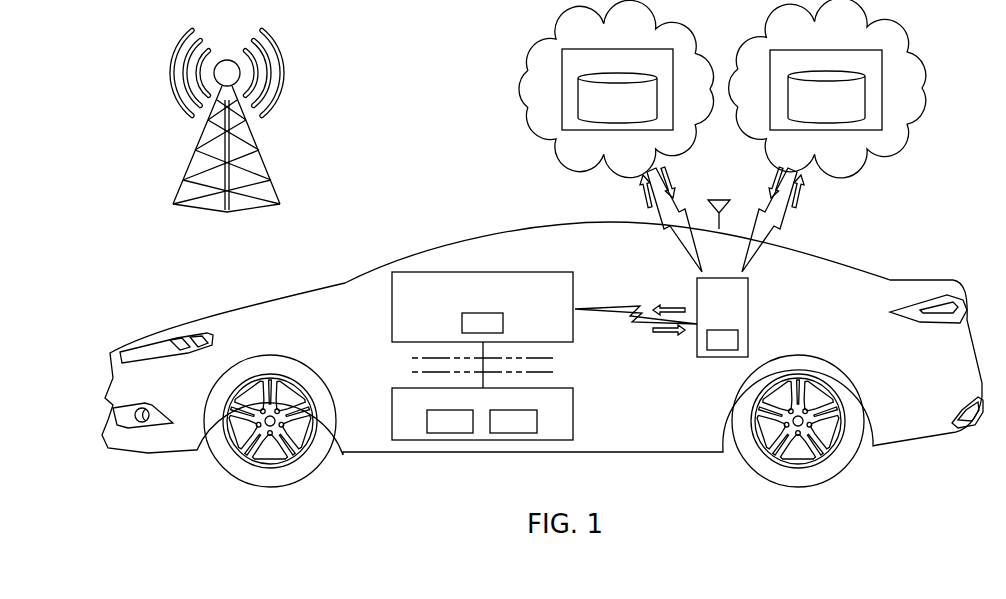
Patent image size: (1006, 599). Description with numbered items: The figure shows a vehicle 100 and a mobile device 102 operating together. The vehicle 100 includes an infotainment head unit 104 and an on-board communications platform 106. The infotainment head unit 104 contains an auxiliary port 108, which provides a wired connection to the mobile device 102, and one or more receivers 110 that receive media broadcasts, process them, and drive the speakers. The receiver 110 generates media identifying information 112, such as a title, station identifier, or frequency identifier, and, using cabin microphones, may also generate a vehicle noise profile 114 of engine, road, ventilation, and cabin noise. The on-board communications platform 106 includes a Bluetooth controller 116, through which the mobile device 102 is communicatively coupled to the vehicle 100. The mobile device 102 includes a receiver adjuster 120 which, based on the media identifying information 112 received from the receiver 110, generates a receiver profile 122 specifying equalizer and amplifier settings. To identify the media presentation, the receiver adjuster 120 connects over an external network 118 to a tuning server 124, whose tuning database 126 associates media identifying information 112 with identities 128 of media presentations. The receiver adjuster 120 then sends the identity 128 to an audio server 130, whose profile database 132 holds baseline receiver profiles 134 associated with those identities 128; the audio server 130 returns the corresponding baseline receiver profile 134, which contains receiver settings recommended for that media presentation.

The vehicle 100 is at (933, 280).
The mobile device 102 is at (750, 317).
The infotainment head unit 104 is at (509, 414).
The on-board communications platform 106 is at (454, 307).
The auxiliary port 108 is at (513, 421).
The receiver 110 is at (450, 421).
The media identifying information 112 is at (744, 262).
The vehicle noise profile 114 is at (668, 374).
The Bluetooth controller 116 is at (462, 322).
The external network 118 is at (530, 99).
The receiver adjuster 120 is at (722, 340).
The receiver profile 122 is at (636, 303).
The tuning server 124 is at (862, 78).
The tuning database 126 is at (865, 100).
The identity of media presentation 128 is at (722, 217).
The audio server 130 is at (585, 80).
The profile database 132 is at (578, 99).
The baseline receiver profile 134 is at (642, 189).